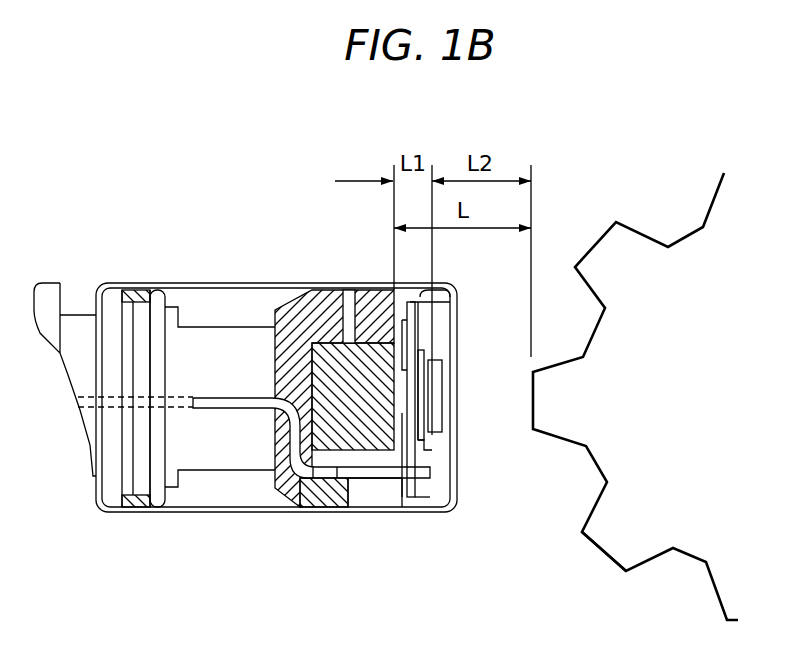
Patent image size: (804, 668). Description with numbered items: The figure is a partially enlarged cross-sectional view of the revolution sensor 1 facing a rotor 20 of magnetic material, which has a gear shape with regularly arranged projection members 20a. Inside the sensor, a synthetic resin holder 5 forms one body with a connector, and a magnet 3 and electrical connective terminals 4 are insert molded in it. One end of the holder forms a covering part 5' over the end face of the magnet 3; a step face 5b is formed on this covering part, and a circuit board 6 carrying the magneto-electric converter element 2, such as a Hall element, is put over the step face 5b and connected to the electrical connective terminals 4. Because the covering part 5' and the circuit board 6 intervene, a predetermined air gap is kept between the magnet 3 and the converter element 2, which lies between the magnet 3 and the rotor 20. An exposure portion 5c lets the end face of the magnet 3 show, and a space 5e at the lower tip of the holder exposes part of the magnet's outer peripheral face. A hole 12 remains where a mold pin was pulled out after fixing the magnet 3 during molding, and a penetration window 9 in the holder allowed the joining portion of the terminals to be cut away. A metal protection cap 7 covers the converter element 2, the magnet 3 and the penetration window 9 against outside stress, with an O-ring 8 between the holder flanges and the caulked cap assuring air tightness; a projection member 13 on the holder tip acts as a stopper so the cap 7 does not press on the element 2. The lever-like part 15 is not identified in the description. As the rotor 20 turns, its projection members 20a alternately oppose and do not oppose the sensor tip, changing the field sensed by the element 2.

The revolution sensor 1 is at (250, 272).
The magneto-electric converter element 2 is at (437, 413).
The magnet 3 is at (338, 370).
The electrical connective terminal 4 is at (295, 503).
The synthetic resin holder 5 is at (324, 524).
The covering part 5' is at (455, 380).
The step face 5b is at (437, 313).
The exposure portion 5c is at (388, 497).
The space 5e is at (378, 500).
The circuit board 6 is at (417, 495).
The protection cap 7 is at (205, 285).
The O-ring 8 is at (126, 290).
The penetration window 9 is at (208, 458).
The hole 12 is at (347, 300).
The projection member 13 is at (420, 280).
The lever 15 is at (117, 497).
The rotor of magnetic material 20 is at (692, 258).
The projection member 20a is at (587, 565).